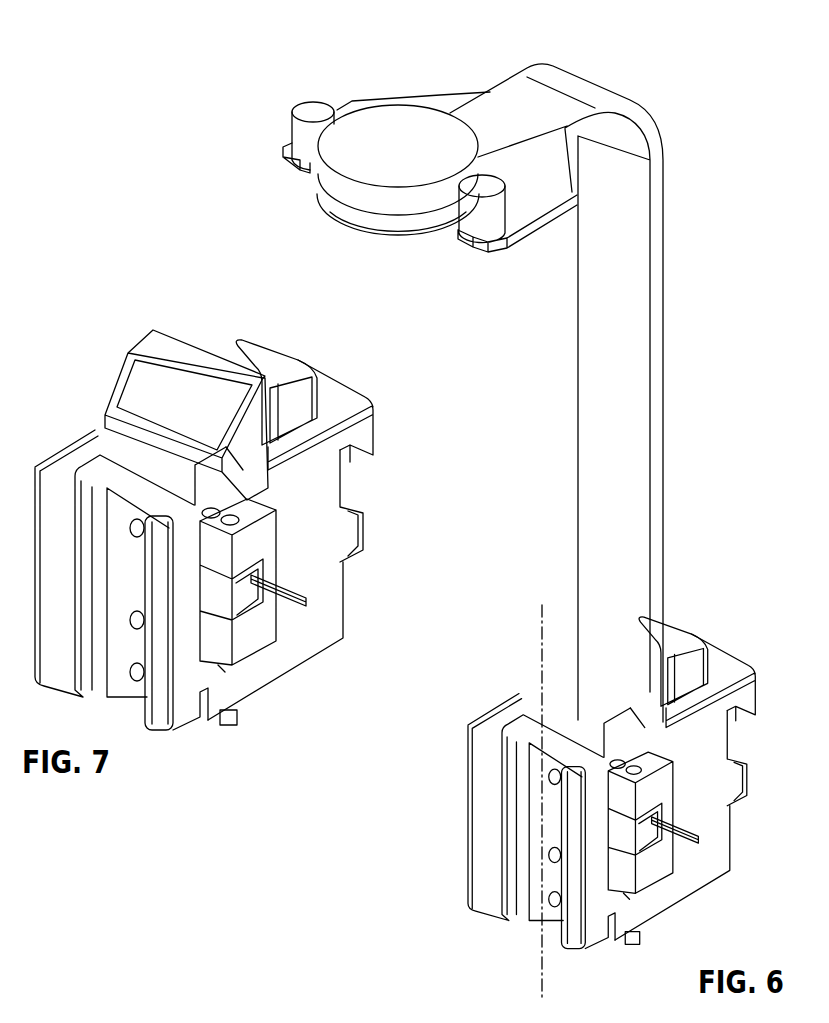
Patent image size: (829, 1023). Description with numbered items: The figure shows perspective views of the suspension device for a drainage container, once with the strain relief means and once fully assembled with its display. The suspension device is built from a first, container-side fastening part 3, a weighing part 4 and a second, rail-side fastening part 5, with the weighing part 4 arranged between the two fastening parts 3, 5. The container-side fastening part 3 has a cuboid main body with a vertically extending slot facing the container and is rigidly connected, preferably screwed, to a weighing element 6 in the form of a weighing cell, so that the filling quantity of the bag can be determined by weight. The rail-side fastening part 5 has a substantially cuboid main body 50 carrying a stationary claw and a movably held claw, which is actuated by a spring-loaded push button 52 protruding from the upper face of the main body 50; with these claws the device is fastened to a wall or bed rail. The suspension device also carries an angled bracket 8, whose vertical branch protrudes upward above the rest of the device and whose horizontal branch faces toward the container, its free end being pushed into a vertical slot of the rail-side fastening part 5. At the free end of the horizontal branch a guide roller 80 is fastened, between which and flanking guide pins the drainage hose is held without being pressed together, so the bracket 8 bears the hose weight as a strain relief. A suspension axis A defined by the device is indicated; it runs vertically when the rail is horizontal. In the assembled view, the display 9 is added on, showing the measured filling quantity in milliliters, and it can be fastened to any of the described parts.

In FIG. 7, the first, container-side fastening part 3 is at (188, 700).
In FIG. 6, the first, container-side fastening part 3 is at (497, 705).
In FIG. 7, the weighing part 4 is at (245, 637).
In FIG. 6, the weighing part 4 is at (652, 868).
In FIG. 7, the second, rail-side fastening part 5 is at (355, 390).
In FIG. 6, the second, rail-side fastening part 5 is at (741, 656).
In FIG. 7, the weighing element 6 is at (247, 590).
In FIG. 6, the weighing element 6 is at (640, 833).
In FIG. 6, the angled bracket 8 is at (635, 372).
In FIG. 7, the display 9 is at (148, 355).
In FIG. 7, the main body 50 is at (328, 628).
In FIG. 7, the push button 52 is at (248, 360).
In FIG. 6, the guide roller 80 is at (395, 137).
In FIG. 6, the suspension axis A is at (542, 960).